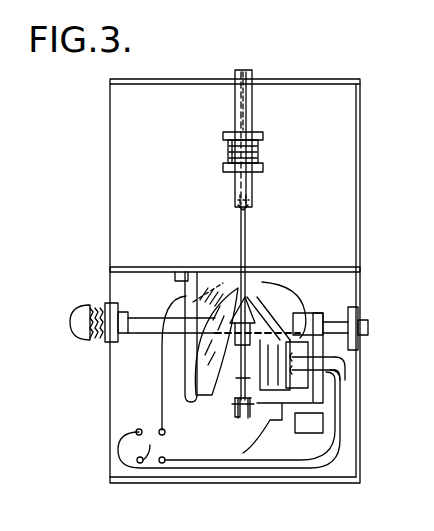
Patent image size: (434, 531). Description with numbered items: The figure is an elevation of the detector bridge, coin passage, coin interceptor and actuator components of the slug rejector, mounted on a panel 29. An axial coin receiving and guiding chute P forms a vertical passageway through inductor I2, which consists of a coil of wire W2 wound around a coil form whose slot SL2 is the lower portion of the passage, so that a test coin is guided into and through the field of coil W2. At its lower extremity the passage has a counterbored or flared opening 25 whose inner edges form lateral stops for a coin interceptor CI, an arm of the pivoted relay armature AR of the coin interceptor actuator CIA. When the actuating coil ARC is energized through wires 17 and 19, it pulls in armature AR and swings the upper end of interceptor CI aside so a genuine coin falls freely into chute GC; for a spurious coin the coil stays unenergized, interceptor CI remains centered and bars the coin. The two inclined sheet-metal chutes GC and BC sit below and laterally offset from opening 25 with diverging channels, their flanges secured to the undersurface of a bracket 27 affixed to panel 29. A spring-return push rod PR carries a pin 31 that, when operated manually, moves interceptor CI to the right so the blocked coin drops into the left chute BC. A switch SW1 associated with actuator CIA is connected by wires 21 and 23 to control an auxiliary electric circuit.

The panel 29 is at (118, 213).
The coin receiving and guiding chute P is at (263, 100).
The slot SL2 is at (236, 112).
The coil of wire W2 is at (258, 153).
The inductor I2 is at (218, 148).
The flared opening 25 is at (236, 207).
The coin interceptor CI is at (246, 223).
The bracket 27 is at (213, 268).
The push rod PR is at (96, 303).
The coin receiving chute BC is at (197, 344).
The wire 23 is at (160, 412).
The pin 31 is at (215, 339).
The relay armature AR is at (242, 374).
The coin receiving chute GC is at (283, 298).
The coin interceptor actuator CIA is at (319, 310).
The actuating coil ARC is at (298, 352).
The switch SW1 is at (273, 425).
The wire 17 is at (130, 430).
The wire 19 is at (140, 447).
The wire 21 is at (168, 462).